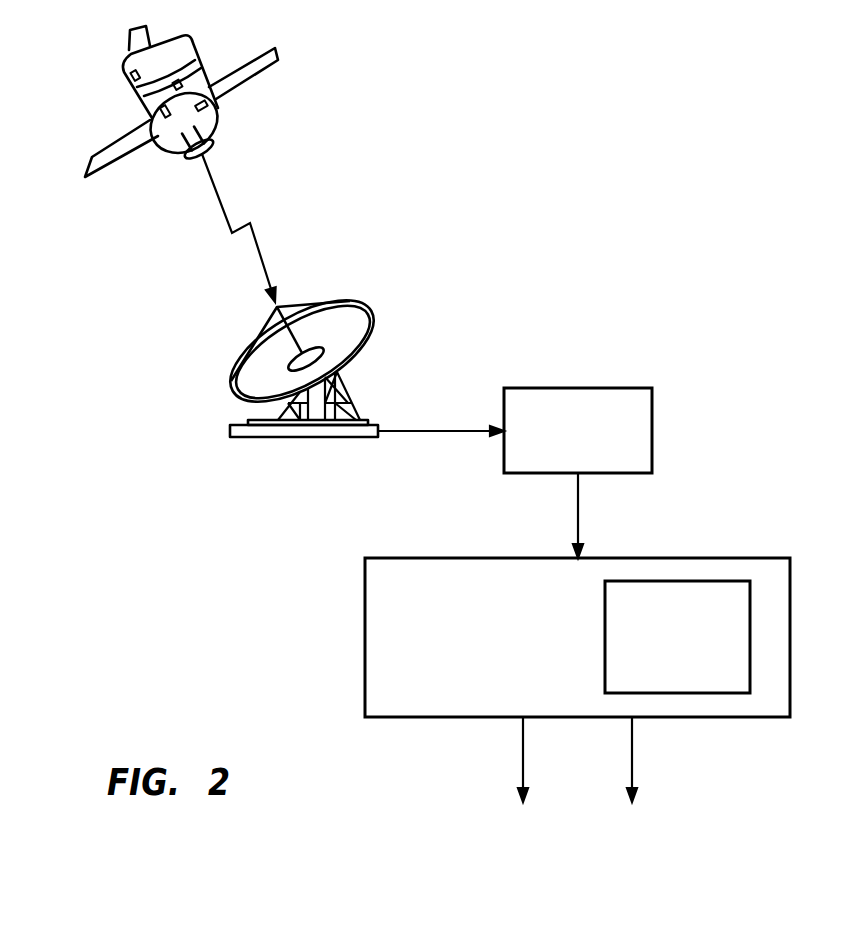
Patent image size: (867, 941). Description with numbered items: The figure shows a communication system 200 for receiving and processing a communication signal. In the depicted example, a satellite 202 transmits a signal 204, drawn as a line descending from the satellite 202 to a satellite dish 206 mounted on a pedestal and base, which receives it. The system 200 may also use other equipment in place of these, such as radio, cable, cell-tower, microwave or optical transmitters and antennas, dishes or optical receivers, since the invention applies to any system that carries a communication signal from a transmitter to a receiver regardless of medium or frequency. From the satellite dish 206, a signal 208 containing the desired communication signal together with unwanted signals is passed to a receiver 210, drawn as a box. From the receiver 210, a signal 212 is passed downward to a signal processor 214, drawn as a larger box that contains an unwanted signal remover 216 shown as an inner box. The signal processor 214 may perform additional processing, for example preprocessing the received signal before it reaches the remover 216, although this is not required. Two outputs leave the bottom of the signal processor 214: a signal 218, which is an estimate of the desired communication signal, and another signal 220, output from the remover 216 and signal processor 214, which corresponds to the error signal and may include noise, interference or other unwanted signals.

The communication system 200 is at (659, 244).
The satellite 202 is at (131, 30).
The signal 204 is at (252, 224).
The satellite dish 206 is at (230, 430).
The signal 208 is at (433, 432).
The receiver 210 is at (557, 456).
The signal 212 is at (578, 508).
The signal processor 214 is at (748, 558).
The unwanted signal remover 216 is at (657, 676).
The signal 218 is at (523, 753).
The signal 220 is at (632, 753).